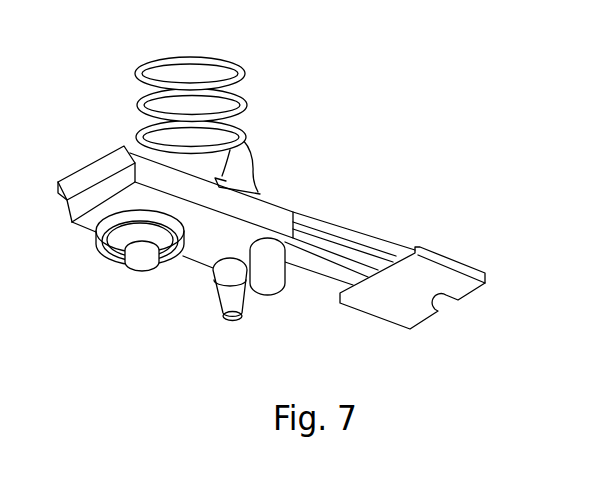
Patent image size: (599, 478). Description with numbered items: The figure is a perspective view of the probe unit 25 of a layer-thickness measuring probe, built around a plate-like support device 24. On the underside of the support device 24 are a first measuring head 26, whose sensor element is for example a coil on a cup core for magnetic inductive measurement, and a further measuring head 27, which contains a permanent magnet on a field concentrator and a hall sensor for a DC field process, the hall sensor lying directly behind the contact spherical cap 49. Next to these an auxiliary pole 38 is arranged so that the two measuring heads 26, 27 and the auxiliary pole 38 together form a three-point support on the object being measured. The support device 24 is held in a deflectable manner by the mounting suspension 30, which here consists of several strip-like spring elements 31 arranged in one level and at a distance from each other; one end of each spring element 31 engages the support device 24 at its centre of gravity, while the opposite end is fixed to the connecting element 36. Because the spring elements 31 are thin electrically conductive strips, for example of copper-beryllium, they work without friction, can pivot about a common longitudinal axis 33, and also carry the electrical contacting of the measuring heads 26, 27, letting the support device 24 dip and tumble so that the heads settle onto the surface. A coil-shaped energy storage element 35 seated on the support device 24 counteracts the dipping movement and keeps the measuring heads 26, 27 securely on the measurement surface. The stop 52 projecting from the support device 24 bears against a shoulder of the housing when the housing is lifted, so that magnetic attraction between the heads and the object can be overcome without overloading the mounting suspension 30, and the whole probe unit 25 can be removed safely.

The support device 24 is at (169, 217).
The probe unit 25 is at (339, 147).
The first measuring head 26 is at (99, 267).
The further measuring head 27 is at (226, 321).
The mounting suspension 30 is at (364, 218).
The spring element 31 is at (352, 232).
The longitudinal axis 33 is at (320, 227).
The energy storage element 35 is at (243, 113).
The connecting element 36 is at (453, 258).
The auxiliary pole 38 is at (268, 280).
The contact spherical cap 49 is at (140, 268).
The stop 52 is at (80, 173).